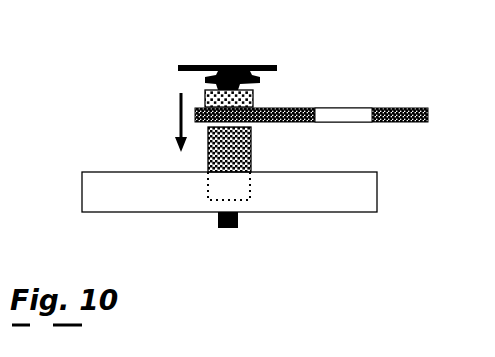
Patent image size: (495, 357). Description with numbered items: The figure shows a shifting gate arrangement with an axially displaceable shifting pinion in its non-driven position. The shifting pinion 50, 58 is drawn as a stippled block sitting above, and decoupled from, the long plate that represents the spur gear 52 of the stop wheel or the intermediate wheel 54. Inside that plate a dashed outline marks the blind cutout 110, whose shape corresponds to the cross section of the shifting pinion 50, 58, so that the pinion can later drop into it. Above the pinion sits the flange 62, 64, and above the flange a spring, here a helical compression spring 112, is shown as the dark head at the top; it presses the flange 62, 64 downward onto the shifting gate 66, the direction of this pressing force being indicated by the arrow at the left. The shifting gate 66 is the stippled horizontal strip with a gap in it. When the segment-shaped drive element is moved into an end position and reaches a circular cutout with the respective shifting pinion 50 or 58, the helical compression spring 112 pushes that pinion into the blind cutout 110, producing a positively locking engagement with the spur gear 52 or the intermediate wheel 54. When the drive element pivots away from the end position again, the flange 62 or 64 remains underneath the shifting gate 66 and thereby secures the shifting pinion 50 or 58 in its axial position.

The helical compression spring 112 is at (240, 82).
The flange 62 is at (303, 93).
The flange 64 is at (250, 98).
The shifting gate 66 is at (405, 109).
The shifting pinion 50 is at (271, 149).
The shifting pinion 58 is at (240, 158).
The spur gear 52 is at (279, 192).
The intermediate wheel 54 is at (363, 198).
The blind cutout 110 is at (252, 203).